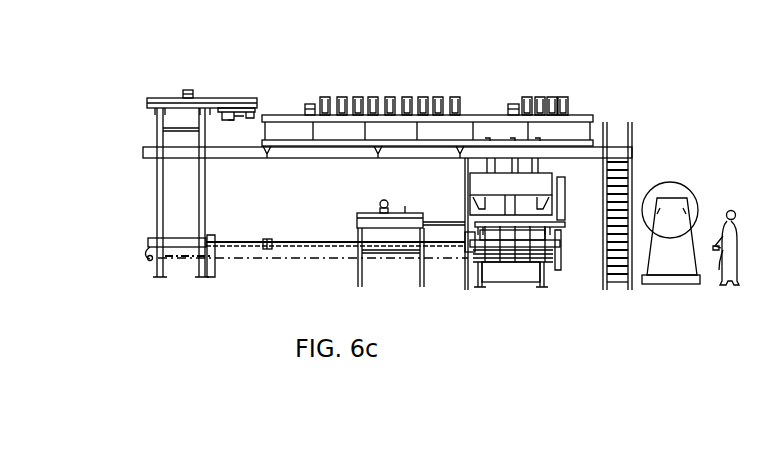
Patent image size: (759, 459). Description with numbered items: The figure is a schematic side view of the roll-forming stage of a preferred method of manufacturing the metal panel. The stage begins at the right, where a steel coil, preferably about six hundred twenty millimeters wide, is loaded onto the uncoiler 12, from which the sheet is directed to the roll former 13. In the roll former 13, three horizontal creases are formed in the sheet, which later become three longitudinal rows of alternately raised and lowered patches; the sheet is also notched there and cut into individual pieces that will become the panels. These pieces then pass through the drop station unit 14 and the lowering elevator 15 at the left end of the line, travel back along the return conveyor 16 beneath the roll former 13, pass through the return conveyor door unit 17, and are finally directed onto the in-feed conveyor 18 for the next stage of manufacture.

The uncoiler 12 is at (690, 191).
The roll former 13 is at (575, 117).
The drop station unit 14 is at (197, 98).
The lowering elevator 15 is at (213, 97).
The return conveyor 16 is at (262, 240).
The return conveyor door unit 17 is at (540, 239).
The in-feed conveyor 18 is at (526, 265).